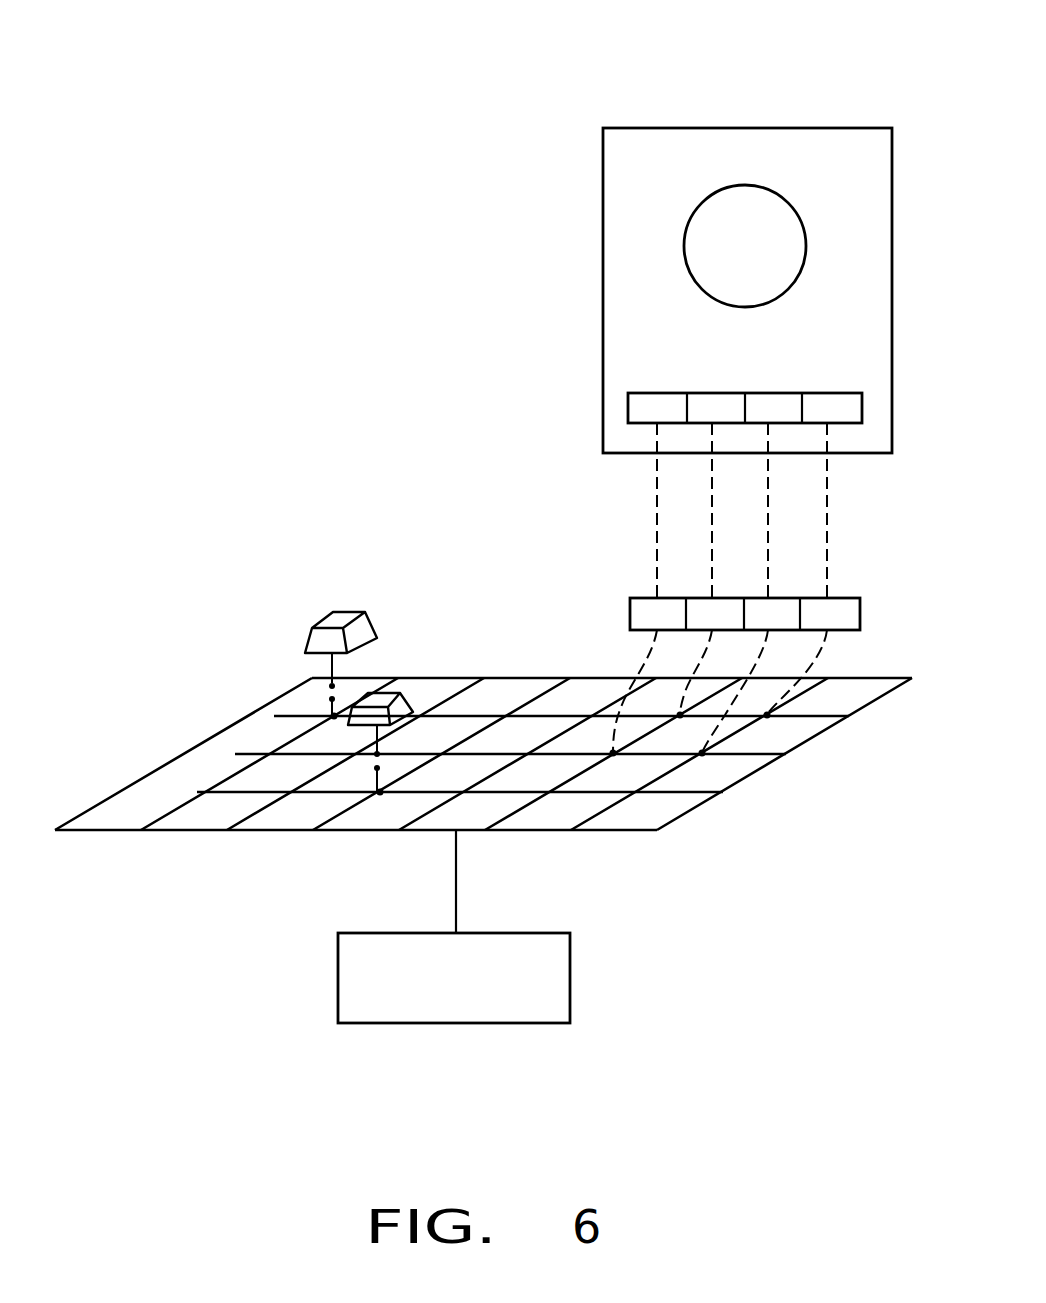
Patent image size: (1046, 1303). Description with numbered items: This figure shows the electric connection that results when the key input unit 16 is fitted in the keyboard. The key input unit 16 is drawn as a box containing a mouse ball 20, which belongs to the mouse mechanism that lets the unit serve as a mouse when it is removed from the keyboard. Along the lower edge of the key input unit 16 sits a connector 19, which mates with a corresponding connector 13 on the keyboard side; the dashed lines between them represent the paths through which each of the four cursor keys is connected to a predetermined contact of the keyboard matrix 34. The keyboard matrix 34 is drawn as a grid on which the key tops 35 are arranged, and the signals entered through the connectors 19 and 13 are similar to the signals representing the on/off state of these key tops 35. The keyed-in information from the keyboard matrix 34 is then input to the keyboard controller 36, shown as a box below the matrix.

The key input unit 16 is at (813, 128).
The mouse ball 20 is at (800, 222).
The connector 19 is at (779, 393).
The connector 13 is at (836, 598).
The keyboard matrix 34 is at (748, 777).
The key tops 35 is at (348, 612).
The keyboard controller 36 is at (570, 979).